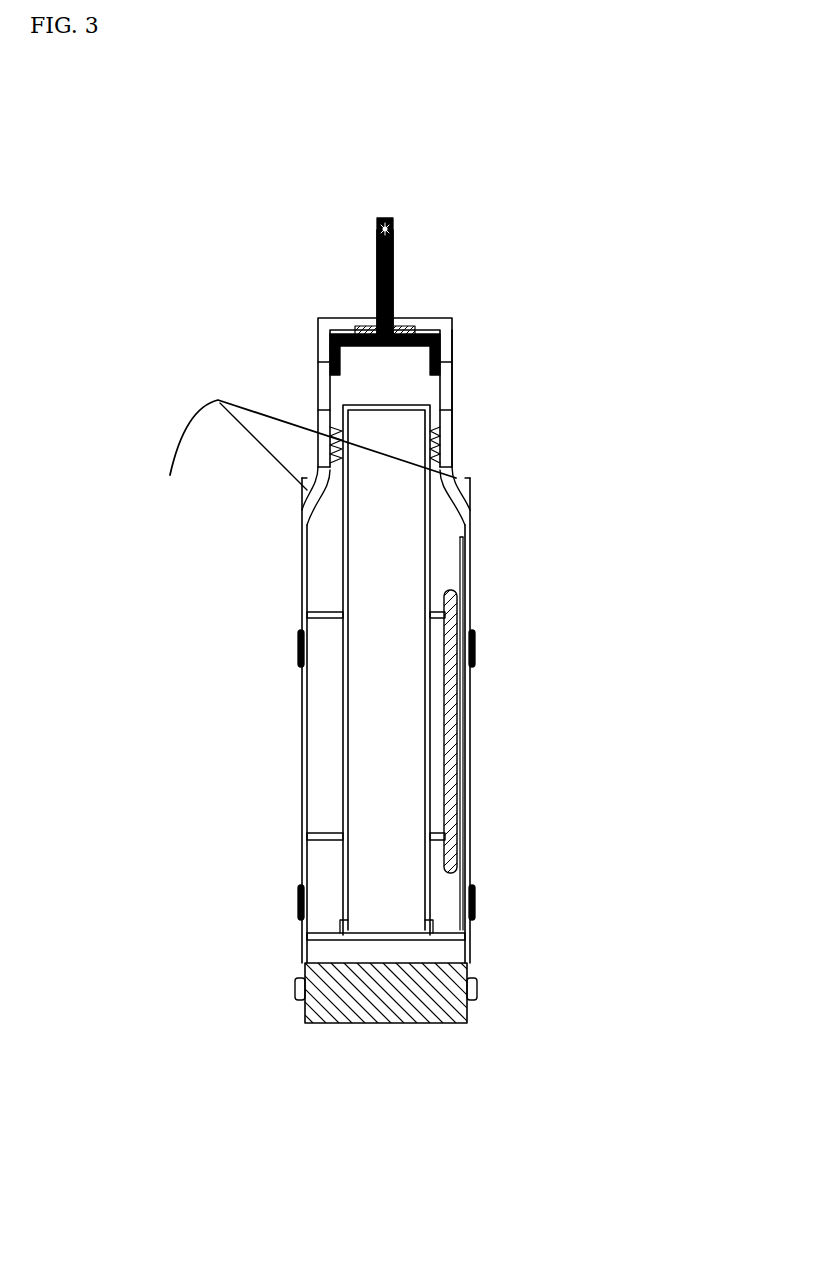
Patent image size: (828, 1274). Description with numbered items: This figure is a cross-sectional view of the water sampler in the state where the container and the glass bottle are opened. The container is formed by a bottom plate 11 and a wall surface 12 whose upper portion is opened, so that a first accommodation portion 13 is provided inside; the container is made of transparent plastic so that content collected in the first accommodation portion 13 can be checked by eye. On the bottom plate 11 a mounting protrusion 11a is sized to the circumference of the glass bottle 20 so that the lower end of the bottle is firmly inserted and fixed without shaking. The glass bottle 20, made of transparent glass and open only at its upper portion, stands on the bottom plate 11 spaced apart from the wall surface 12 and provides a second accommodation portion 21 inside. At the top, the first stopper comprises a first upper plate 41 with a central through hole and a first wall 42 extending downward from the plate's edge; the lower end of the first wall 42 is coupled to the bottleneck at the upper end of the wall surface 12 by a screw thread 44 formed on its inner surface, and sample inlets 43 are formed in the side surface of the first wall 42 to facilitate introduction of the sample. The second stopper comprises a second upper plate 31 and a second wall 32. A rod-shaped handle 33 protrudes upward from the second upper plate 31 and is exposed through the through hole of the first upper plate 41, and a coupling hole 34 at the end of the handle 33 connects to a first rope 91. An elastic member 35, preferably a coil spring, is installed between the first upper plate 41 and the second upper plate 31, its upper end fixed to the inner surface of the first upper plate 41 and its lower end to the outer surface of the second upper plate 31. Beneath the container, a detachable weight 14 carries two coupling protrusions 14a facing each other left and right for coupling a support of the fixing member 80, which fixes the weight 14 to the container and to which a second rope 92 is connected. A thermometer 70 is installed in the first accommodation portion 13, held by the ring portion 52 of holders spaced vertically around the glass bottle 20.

The bottom plate 11 is at (370, 960).
The mounting protrusion 11a is at (335, 933).
The wall surface 12 is at (305, 705).
The first accommodation portion 13 is at (325, 855).
The weight 14 is at (412, 1005).
The coupling protrusion 14a is at (477, 990).
The glass bottle 20 is at (340, 758).
The second accommodation portion 21 is at (390, 884).
The second upper plate 31 is at (336, 326).
The second wall 32 is at (452, 368).
The handle 33 is at (393, 278).
The coupling hole 34 is at (386, 218).
The elastic member 35 is at (367, 328).
The first upper plate 41 is at (345, 326).
The first wall 42 is at (452, 342).
The sample inlet 43 is at (318, 385).
The screw thread 44 is at (444, 450).
The ring portion 52 is at (333, 612).
The thermometer 70 is at (452, 733).
The fixing member 80 is at (470, 582).
The first rope 91 is at (393, 220).
The second rope 92 is at (170, 474).